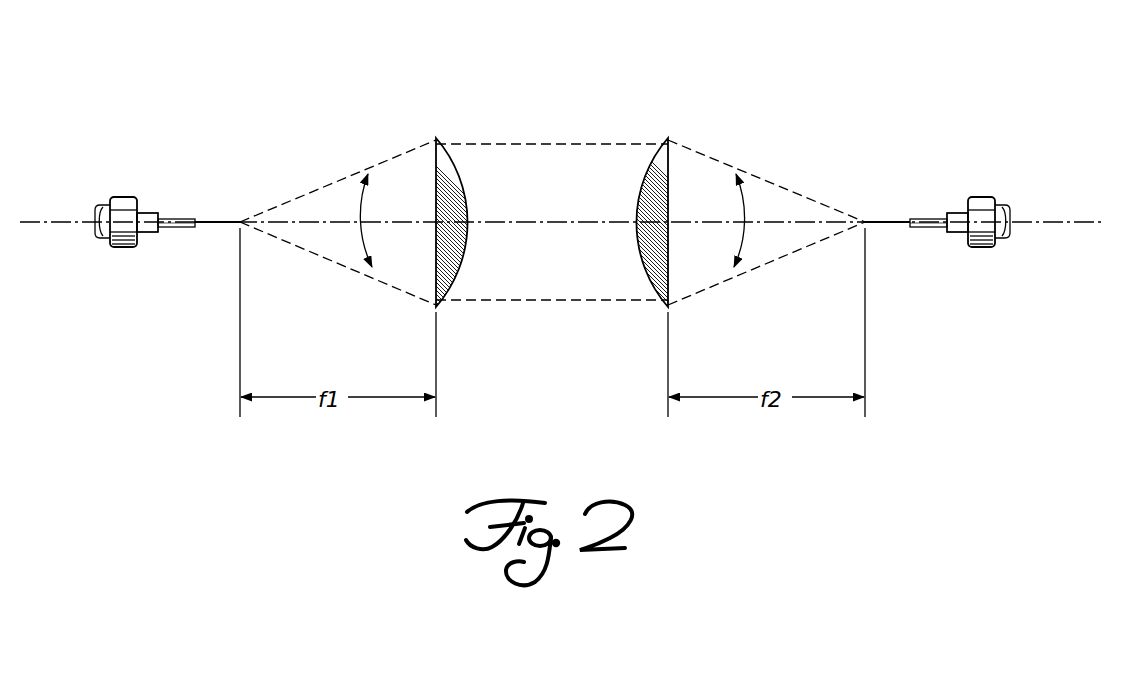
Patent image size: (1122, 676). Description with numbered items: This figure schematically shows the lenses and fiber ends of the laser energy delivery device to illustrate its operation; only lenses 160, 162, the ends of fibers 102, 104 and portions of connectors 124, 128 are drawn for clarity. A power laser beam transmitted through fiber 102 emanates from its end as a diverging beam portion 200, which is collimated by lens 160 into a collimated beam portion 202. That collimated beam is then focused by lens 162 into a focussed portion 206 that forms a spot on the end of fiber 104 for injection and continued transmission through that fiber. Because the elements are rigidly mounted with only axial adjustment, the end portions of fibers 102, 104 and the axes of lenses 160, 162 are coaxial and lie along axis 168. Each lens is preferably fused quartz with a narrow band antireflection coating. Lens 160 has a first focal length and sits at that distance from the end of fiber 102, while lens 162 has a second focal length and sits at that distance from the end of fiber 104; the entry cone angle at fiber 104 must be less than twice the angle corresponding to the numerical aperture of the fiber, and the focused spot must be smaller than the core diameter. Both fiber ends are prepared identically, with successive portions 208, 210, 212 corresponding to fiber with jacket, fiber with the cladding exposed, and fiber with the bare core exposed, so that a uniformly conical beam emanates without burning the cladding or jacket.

The fiber 102 is at (150, 205).
The fiber 104 is at (957, 205).
The connector 124 is at (122, 198).
The connector 128 is at (985, 196).
The lens 160 is at (466, 190).
The lens 162 is at (640, 262).
The axis 168 is at (548, 224).
The diverging beam portion 200 is at (402, 155).
The collimated beam portion 202 is at (607, 144).
The focussed portion 206 is at (772, 183).
The fiber with jacket 208 is at (148, 235).
The fiber without jacket but with cladding exposed 210 is at (185, 218).
The fiber with bare core exposed 212 is at (215, 226).